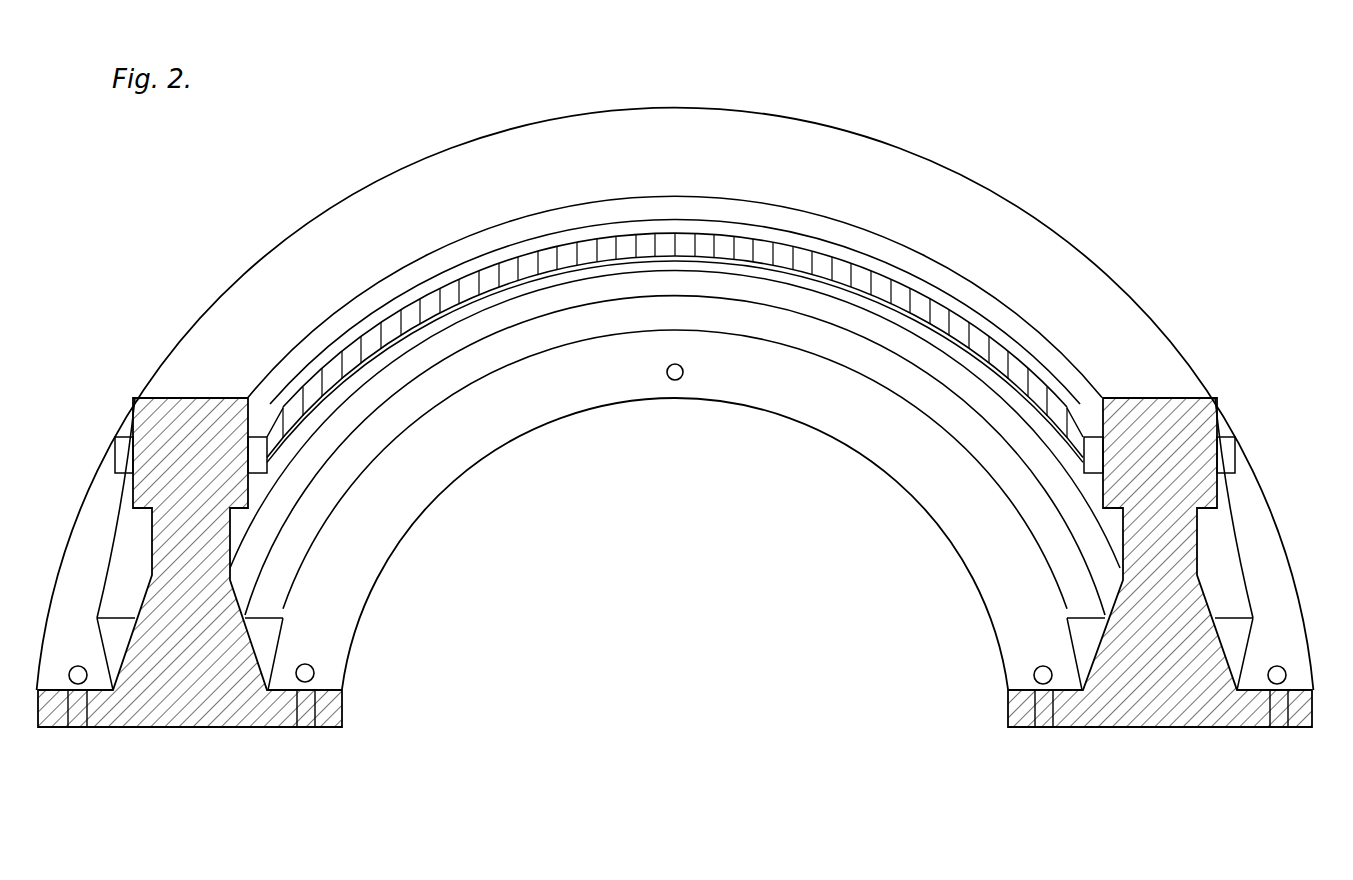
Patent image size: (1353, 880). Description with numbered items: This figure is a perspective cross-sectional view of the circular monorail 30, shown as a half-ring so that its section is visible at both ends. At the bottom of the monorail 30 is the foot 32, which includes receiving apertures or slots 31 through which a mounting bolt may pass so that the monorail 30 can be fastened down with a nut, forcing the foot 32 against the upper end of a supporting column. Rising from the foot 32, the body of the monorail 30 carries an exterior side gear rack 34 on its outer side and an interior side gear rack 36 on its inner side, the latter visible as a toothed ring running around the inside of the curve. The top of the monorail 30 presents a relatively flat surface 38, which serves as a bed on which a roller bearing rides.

The circular monorail 30 is at (1054, 181).
The receiving apertures or slots 31 is at (684, 371).
The foot 32 is at (346, 705).
The exterior side gear rack 34 is at (123, 453).
The interior side gear rack 36 is at (270, 441).
The relatively flat surface 38 is at (1160, 356).